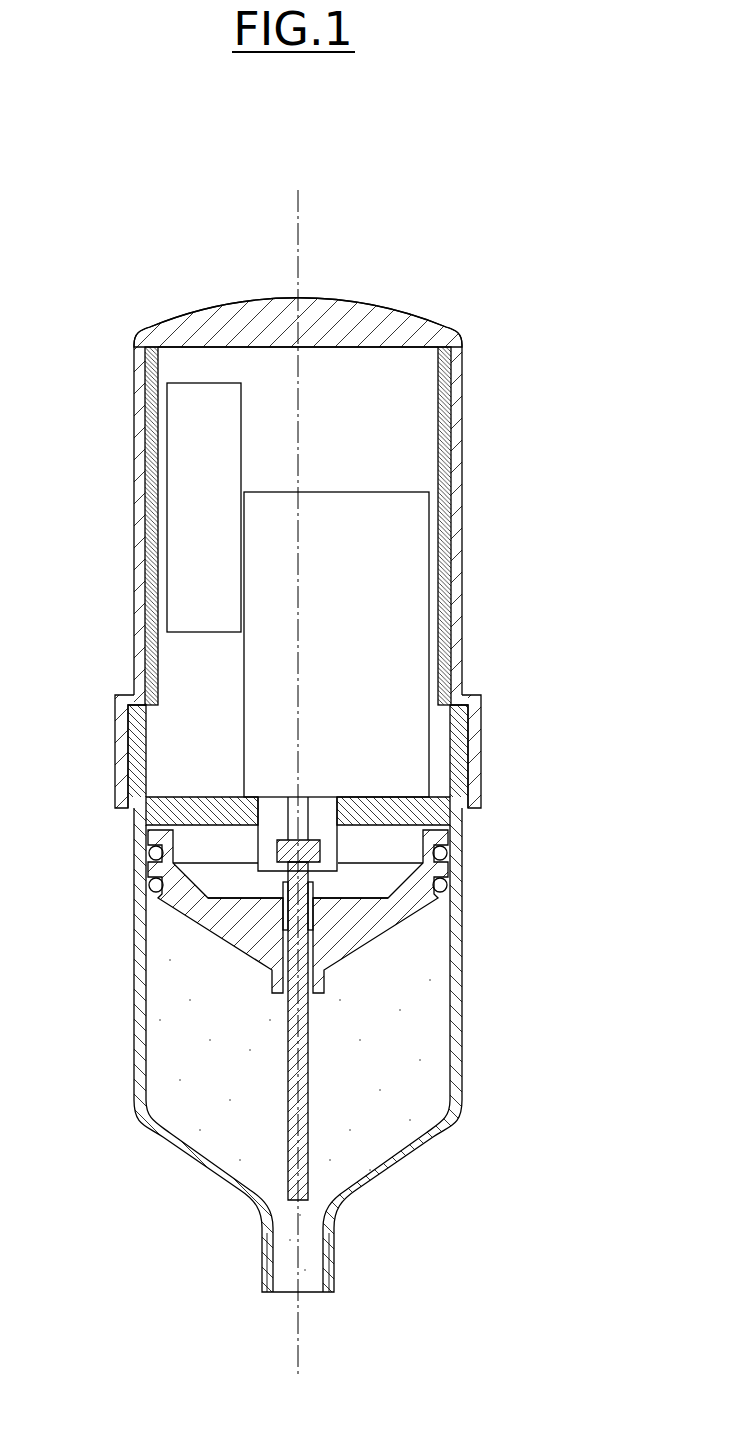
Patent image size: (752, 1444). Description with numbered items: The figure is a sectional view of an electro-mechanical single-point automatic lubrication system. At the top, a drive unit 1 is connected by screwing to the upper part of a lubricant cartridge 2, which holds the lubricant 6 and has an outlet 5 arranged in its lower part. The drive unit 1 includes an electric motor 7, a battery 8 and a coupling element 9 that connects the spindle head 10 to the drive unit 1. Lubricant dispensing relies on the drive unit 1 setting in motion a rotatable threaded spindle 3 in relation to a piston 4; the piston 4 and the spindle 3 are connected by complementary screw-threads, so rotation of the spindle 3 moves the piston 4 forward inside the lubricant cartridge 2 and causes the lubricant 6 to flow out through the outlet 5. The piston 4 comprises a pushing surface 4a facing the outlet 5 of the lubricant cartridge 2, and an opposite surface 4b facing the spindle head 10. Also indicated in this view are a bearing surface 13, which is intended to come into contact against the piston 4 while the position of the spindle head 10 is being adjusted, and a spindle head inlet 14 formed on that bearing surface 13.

The drive unit 1 is at (132, 517).
The lubricant cartridge 2 is at (131, 1047).
The threaded spindle 3 is at (310, 1194).
The piston 4 is at (352, 933).
The pushing surface 4a is at (352, 926).
The opposite surface 4b is at (350, 897).
The outlet 5 is at (313, 1262).
The lubricant 6 is at (400, 1106).
The electric motor 7 is at (395, 579).
The battery 8 is at (200, 444).
The coupling element 9 is at (338, 840).
The spindle head 10 is at (286, 852).
The bearing surface 13 is at (255, 900).
The spindle head inlet 14 is at (282, 900).